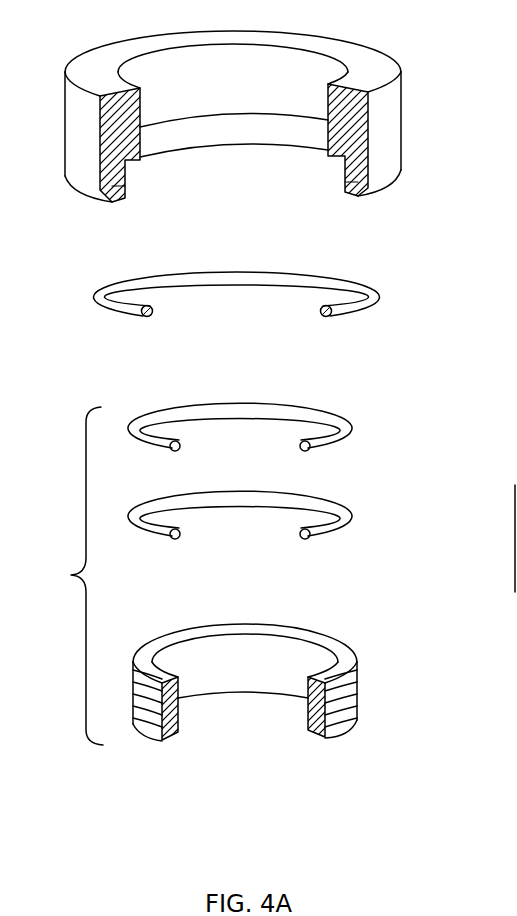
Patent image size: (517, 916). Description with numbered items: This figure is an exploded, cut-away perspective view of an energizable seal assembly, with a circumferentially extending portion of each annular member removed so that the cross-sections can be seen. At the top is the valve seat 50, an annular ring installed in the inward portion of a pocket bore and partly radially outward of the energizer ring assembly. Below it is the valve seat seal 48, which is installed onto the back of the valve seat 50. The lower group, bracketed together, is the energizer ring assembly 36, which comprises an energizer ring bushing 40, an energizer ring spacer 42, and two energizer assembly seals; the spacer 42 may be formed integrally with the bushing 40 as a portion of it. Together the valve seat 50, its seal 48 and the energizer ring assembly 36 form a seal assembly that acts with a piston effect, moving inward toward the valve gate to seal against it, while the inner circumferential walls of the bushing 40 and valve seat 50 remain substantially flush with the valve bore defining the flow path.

The valve seat 50 is at (403, 112).
The valve seat seal 48 is at (382, 293).
The energizer ring assembly 36 is at (70, 575).
The energizer ring spacer 42 is at (300, 718).
The energizer ring bushing 40 is at (320, 732).